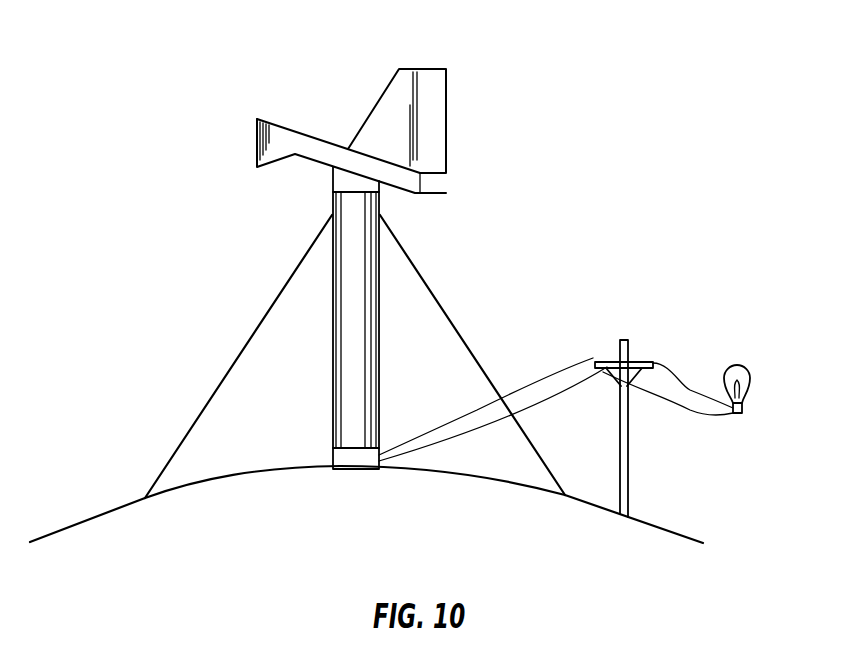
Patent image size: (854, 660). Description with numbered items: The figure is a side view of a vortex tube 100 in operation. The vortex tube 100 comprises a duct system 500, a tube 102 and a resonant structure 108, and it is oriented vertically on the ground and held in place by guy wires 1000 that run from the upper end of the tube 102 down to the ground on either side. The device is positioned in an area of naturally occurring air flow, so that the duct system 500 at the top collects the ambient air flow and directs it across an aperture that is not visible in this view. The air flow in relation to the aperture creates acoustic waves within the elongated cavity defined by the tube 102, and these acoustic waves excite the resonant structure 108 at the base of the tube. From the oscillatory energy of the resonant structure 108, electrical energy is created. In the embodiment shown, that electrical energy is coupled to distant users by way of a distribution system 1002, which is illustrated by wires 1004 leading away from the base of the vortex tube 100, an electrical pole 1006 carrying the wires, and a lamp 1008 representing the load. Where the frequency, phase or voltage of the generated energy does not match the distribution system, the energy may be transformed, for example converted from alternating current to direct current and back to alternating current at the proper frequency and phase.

The vortex tube 100 is at (200, 278).
The duct system 500 is at (280, 120).
The tube 102 is at (333, 350).
The resonant structure 108 is at (333, 460).
The guy wires 1000 is at (213, 390).
The distribution system 1002 is at (612, 301).
The wires 1004 is at (477, 410).
The electrical pole 1006 is at (628, 441).
The lamp 1008 is at (734, 363).